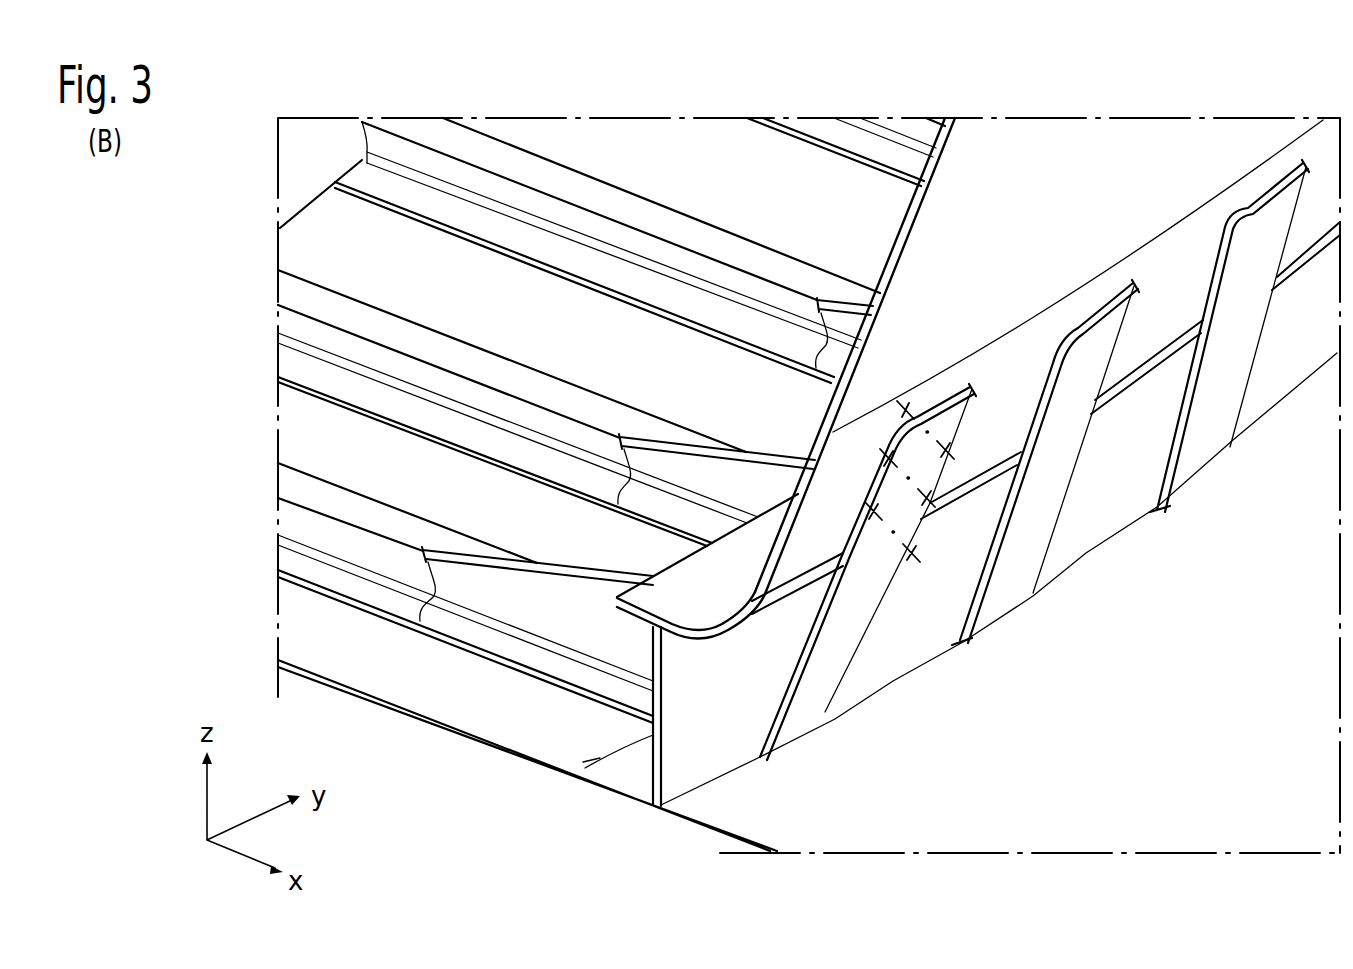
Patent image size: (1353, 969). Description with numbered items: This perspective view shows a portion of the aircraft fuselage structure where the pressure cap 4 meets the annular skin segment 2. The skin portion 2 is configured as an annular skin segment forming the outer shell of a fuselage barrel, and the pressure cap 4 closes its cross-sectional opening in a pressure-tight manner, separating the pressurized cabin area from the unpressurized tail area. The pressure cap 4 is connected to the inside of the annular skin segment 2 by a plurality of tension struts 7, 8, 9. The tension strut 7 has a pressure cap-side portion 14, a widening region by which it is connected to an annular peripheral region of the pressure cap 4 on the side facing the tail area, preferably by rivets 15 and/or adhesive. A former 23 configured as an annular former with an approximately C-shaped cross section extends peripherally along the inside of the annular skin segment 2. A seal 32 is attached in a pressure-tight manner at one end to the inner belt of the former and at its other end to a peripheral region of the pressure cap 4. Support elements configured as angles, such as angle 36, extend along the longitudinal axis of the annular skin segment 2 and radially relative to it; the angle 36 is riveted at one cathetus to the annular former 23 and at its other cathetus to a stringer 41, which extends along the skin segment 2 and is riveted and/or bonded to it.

The skin portion 2 is at (418, 690).
The pressure cap 4 is at (1122, 134).
The tension strut 7 is at (810, 715).
The tension strut 8 is at (1002, 597).
The tension strut 9 is at (1194, 462).
The pressure cap-side portion 14 is at (1026, 134).
The rivet 15 is at (873, 510).
The former 23 is at (735, 746).
The seal 32 is at (709, 636).
The support element 36 is at (503, 600).
The stringer 41 is at (300, 556).